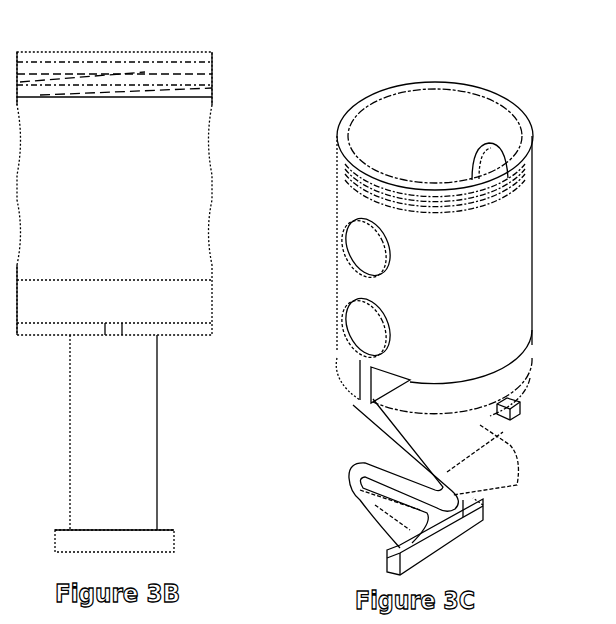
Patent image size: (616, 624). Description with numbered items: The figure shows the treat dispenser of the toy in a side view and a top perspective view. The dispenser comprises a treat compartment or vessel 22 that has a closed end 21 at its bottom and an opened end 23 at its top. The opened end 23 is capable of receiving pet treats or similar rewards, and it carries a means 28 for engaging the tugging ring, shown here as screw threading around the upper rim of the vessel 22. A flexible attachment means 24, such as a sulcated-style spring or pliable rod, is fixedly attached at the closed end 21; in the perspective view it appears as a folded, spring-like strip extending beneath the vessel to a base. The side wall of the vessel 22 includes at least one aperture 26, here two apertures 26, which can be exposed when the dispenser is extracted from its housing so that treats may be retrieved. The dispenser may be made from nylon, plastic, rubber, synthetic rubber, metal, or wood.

In FIG. 3C, the closed end 21 is at (528, 338).
In FIG. 3B, the treat compartment or vessel 22 is at (193, 186).
In FIG. 3C, the treat compartment or vessel 22 is at (513, 272).
In FIG. 3C, the opened end 23 is at (433, 128).
In FIG. 3B, the flexible attachment means 24 is at (92, 460).
In FIG. 3C, the flexible attachment means 24 is at (358, 480).
In FIG. 3C, the aperture 26 is at (375, 318).
In FIG. 3B, the means for engaging the tugging ring 28 is at (112, 77).
In FIG. 3C, the means for engaging the tugging ring 28 is at (342, 172).